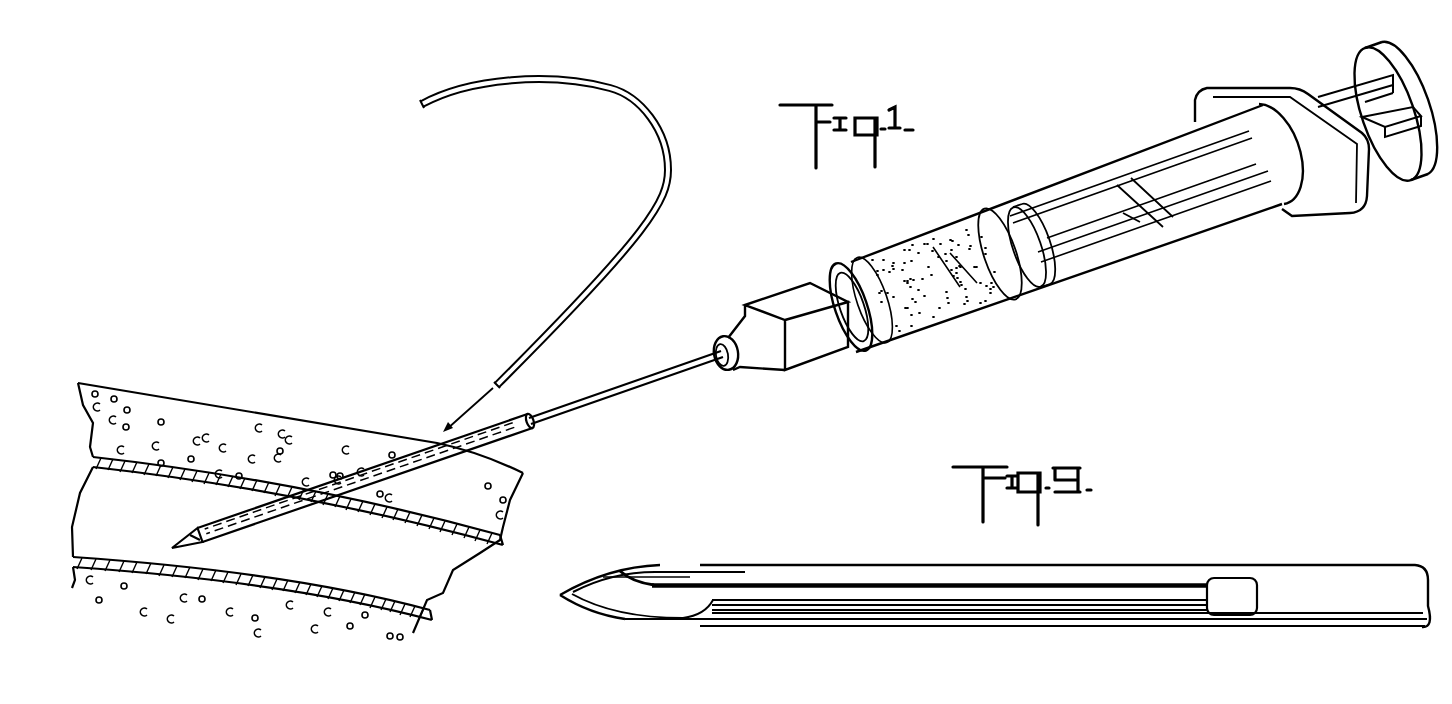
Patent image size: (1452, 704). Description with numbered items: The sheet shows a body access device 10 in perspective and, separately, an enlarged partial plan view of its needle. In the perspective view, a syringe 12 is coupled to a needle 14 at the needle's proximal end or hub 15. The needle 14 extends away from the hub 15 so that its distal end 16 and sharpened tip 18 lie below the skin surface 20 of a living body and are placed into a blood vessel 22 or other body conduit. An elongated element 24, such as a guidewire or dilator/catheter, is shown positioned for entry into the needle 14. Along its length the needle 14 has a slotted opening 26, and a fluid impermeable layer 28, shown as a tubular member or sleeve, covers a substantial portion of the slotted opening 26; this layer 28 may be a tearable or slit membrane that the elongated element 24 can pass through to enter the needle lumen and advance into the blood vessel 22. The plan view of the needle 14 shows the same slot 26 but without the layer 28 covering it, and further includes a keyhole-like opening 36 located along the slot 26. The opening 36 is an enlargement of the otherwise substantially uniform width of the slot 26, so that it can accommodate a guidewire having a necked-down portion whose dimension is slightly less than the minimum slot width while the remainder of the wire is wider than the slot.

In FIG. 1, the body access device 10 is at (285, 175).
In FIG. 1, the syringe 12 is at (1090, 272).
In FIG. 1, the needle 14 is at (647, 388).
In FIG. 9, the needle 14 is at (803, 565).
In FIG. 1, the hub 15 is at (810, 360).
In FIG. 1, the distal end 16 is at (190, 535).
In FIG. 9, the distal end 16 is at (653, 565).
In FIG. 1, the sharpened tip 18 is at (172, 548).
In FIG. 9, the sharpened tip 18 is at (560, 596).
In FIG. 1, the skin surface 20 is at (170, 400).
In FIG. 1, the blood vessel 22 is at (133, 573).
In FIG. 1, the elongated element 24 is at (580, 314).
In FIG. 9, the slotted opening 26 is at (928, 600).
In FIG. 1, the fluid impermeable layer 28 is at (512, 433).
In FIG. 9, the keyhole-like opening 36 is at (1237, 578).